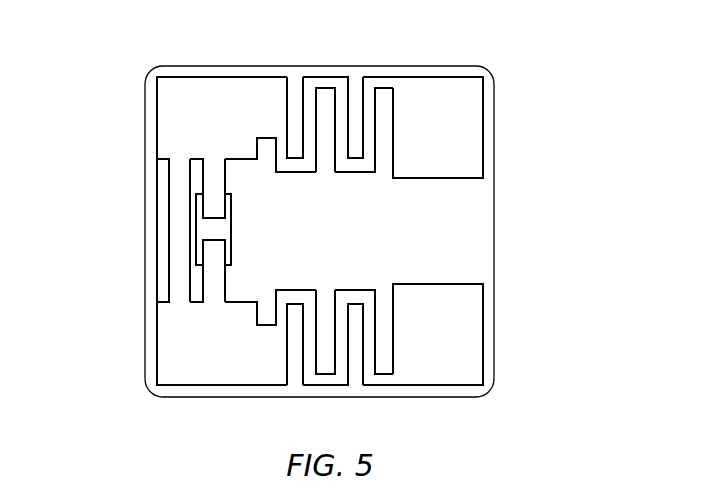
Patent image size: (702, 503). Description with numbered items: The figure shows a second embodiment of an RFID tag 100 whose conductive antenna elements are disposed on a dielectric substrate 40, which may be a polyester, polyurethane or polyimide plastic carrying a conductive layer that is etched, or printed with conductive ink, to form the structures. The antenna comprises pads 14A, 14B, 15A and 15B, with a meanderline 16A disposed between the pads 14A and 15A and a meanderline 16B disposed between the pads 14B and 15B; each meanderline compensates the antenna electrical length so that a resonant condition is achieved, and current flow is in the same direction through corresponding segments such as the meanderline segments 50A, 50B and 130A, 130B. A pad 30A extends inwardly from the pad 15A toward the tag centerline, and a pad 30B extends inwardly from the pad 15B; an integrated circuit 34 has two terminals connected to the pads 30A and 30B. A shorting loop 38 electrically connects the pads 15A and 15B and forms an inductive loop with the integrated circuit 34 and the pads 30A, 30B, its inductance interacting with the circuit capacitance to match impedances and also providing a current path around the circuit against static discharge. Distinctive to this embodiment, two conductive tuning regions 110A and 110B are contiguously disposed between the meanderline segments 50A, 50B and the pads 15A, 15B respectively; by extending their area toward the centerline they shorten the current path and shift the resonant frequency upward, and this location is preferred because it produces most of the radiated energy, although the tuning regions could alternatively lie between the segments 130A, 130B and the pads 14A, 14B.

The RFID tag 100 is at (120, 103).
The dielectric substrate 40 is at (480, 238).
The pad 15A is at (183, 77).
The pad 15B is at (158, 343).
The conductive tuning region 110A is at (268, 77).
The conductive tuning region 110B is at (265, 387).
The meanderline segment 50A is at (293, 100).
The meanderline segment 50B is at (292, 313).
The meanderline 16A is at (323, 77).
The meanderline 16B is at (352, 290).
The meanderline segment 130A is at (376, 150).
The meanderline segment 130B is at (377, 308).
The pad 14A is at (493, 144).
The pad 14B is at (493, 338).
The shorting loop 38 is at (168, 227).
The pad 30A is at (208, 207).
The pad 30B is at (208, 252).
The integrated circuit 34 is at (215, 232).